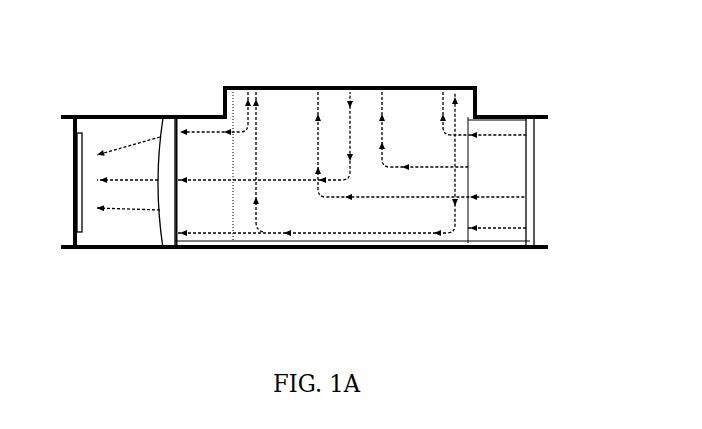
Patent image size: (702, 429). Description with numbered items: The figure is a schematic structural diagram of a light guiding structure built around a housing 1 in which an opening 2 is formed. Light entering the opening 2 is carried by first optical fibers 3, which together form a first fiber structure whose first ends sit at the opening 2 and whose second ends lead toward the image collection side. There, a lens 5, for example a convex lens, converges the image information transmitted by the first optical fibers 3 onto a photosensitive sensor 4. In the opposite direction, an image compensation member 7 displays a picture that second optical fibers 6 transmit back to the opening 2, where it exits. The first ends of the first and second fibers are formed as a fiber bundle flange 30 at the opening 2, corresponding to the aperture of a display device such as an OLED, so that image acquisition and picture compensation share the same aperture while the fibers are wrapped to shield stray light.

The housing 1 is at (478, 116).
The opening 2 is at (332, 107).
The fiber bundle flange 30 is at (408, 88).
The first optical fiber 3 is at (222, 183).
The photosensitive sensor 4 is at (75, 185).
The lens 5 is at (158, 210).
The second optical fiber 6 is at (393, 198).
The image compensation member 7 is at (528, 183).